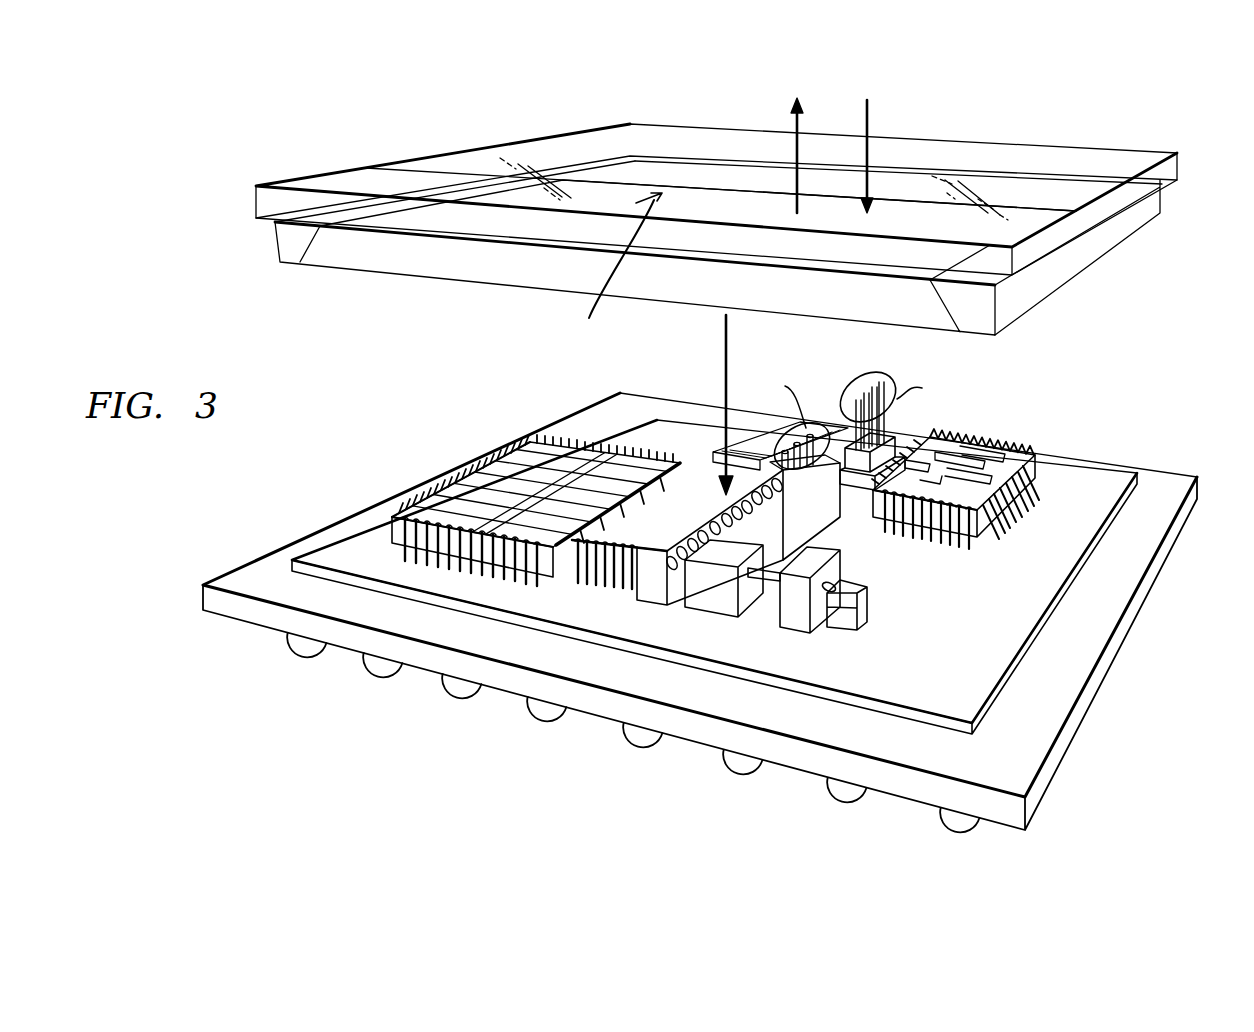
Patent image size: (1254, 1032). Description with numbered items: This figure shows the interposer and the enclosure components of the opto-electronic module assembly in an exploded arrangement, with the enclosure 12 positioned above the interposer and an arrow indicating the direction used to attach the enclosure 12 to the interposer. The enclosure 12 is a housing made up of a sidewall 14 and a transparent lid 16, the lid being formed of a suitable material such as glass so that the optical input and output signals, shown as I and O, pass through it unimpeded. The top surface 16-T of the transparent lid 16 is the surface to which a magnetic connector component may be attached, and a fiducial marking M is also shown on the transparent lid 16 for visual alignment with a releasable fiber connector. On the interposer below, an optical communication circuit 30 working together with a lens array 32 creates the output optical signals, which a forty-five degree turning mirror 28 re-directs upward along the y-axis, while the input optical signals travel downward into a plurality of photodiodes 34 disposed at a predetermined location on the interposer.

The enclosure 12 is at (241, 175).
The sidewall 14 is at (1128, 228).
The transparent lid 16 is at (1176, 169).
The top surface 16-T is at (1100, 156).
The 45° turning mirror 28 is at (823, 510).
The optical communication circuit 30 is at (592, 558).
The lens array 32 is at (670, 574).
The photodiodes 34 is at (897, 462).